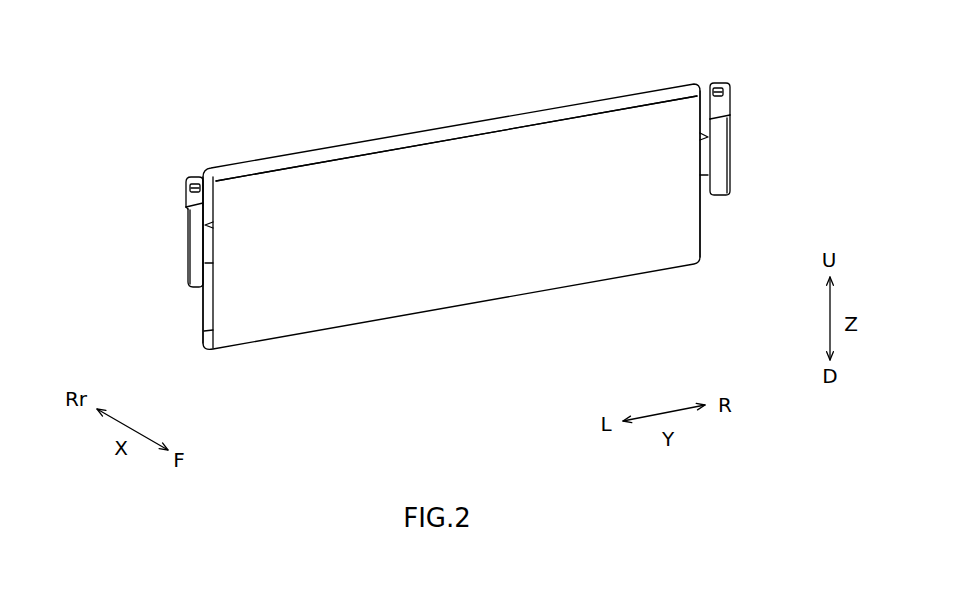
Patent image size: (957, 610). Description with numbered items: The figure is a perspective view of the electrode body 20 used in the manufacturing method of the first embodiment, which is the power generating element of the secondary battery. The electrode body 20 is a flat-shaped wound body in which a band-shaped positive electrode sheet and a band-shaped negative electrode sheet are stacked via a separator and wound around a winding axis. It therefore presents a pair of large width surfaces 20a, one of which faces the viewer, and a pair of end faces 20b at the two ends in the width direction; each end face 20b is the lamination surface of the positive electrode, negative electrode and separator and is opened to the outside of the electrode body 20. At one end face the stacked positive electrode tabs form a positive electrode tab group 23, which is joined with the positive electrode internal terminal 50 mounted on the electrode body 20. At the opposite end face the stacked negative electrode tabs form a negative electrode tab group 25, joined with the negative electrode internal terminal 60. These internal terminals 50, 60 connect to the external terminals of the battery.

The electrode body 20 is at (634, 90).
The large width surface 20a is at (465, 148).
The end face 20b is at (204, 331).
The positive electrode tab group 23 is at (212, 256).
The negative electrode tab group 25 is at (704, 177).
The positive electrode internal terminal 50 is at (186, 256).
The negative electrode internal terminal 60 is at (731, 150).